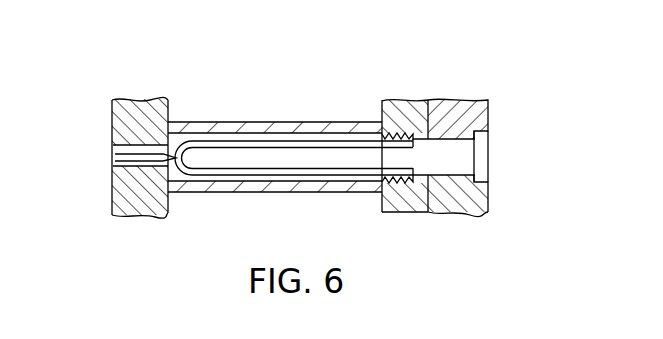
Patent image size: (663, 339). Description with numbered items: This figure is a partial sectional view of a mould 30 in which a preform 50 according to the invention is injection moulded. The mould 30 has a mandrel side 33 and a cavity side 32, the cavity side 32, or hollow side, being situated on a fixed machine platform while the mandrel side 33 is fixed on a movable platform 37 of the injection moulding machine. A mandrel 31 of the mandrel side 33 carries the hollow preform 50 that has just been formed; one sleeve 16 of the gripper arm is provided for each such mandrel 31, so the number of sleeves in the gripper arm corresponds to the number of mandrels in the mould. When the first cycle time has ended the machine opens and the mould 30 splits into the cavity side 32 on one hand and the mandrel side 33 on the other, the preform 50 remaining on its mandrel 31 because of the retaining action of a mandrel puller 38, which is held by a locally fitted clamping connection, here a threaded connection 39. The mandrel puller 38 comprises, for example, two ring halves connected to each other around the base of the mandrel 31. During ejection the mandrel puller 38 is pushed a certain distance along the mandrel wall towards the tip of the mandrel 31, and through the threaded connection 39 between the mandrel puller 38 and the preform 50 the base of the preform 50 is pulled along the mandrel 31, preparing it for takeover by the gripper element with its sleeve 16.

The sleeve 16 is at (264, 122).
The mould 30 is at (466, 143).
The mandrel 31 is at (231, 153).
The cavity side 32 is at (128, 187).
The mandrel side 33 is at (458, 103).
The movable platform 37 is at (467, 195).
The mandrel puller 38 is at (403, 202).
The threaded connection 39 is at (382, 100).
The preform 50 is at (298, 133).